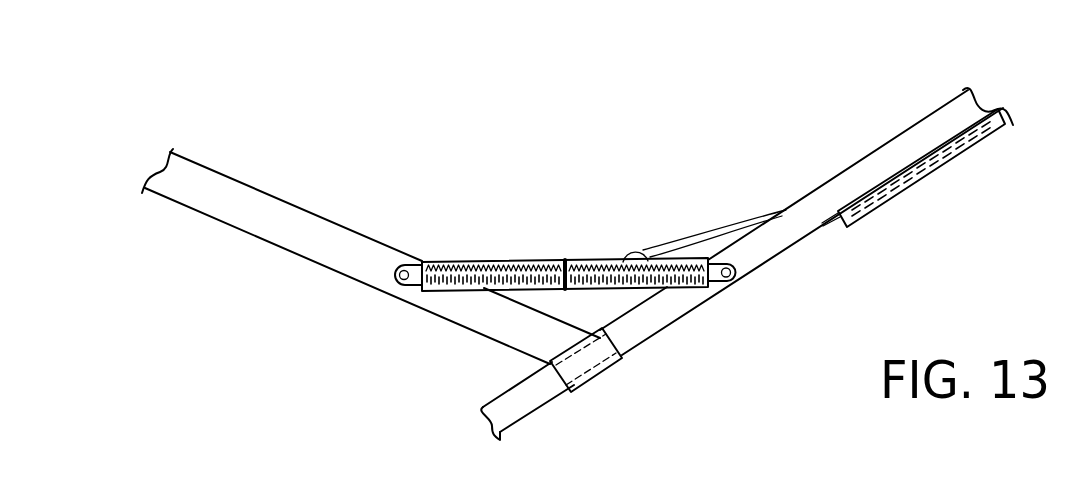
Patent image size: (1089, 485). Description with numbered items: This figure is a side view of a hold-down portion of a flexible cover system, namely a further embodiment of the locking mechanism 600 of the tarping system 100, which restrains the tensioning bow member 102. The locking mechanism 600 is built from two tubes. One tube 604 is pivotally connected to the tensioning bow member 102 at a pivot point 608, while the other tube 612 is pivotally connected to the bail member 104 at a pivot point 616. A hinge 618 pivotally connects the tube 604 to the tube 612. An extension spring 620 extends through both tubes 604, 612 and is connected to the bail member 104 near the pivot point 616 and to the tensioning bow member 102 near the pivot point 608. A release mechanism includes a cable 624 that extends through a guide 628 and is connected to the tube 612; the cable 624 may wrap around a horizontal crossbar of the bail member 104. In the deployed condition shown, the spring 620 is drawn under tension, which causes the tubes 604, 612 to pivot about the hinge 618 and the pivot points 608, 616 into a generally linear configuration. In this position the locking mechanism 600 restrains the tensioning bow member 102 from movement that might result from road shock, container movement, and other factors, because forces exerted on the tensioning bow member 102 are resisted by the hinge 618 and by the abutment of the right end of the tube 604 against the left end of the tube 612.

The tarping system 100 is at (360, 79).
The tensioning bow member 102 is at (312, 213).
The bail member 104 is at (853, 167).
The locking mechanism 600 is at (500, 130).
The tube 604 is at (462, 260).
The pivot point 608 is at (397, 283).
The tube 612 is at (645, 296).
The pivot point 616 is at (741, 277).
The hinge 618 is at (566, 290).
The extension spring 620 is at (475, 287).
The cable 624 is at (693, 233).
The guide 628 is at (968, 146).